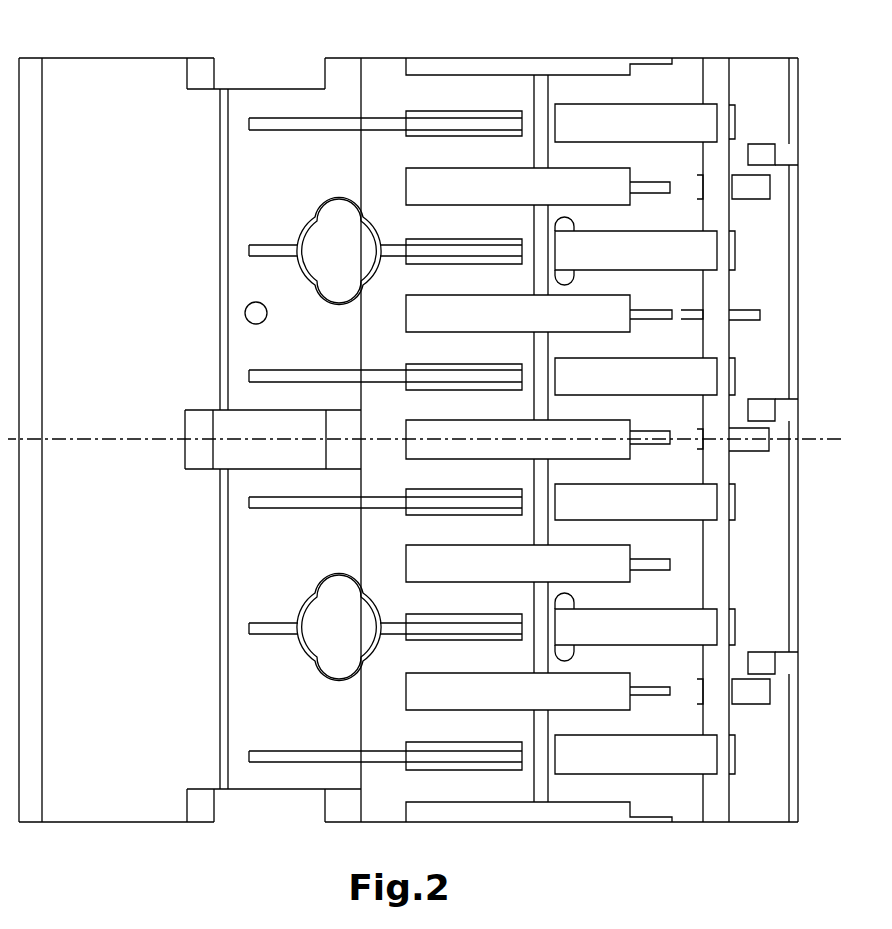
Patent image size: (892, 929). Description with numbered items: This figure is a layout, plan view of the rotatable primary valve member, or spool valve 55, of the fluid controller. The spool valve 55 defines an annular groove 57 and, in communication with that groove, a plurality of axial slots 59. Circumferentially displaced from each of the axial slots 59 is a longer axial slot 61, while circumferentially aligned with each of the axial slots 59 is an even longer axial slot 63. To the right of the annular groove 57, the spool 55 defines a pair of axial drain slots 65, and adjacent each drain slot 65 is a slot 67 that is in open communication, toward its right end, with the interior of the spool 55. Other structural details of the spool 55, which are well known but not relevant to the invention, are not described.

The primary valve member 55 is at (391, 55).
The annular groove 57 is at (715, 64).
The axial slots 59 is at (627, 120).
The longer axial slot 61 is at (421, 183).
The even longer axial slot 63 is at (500, 246).
The axial drain slots 65 is at (755, 183).
The slot 67 is at (763, 153).